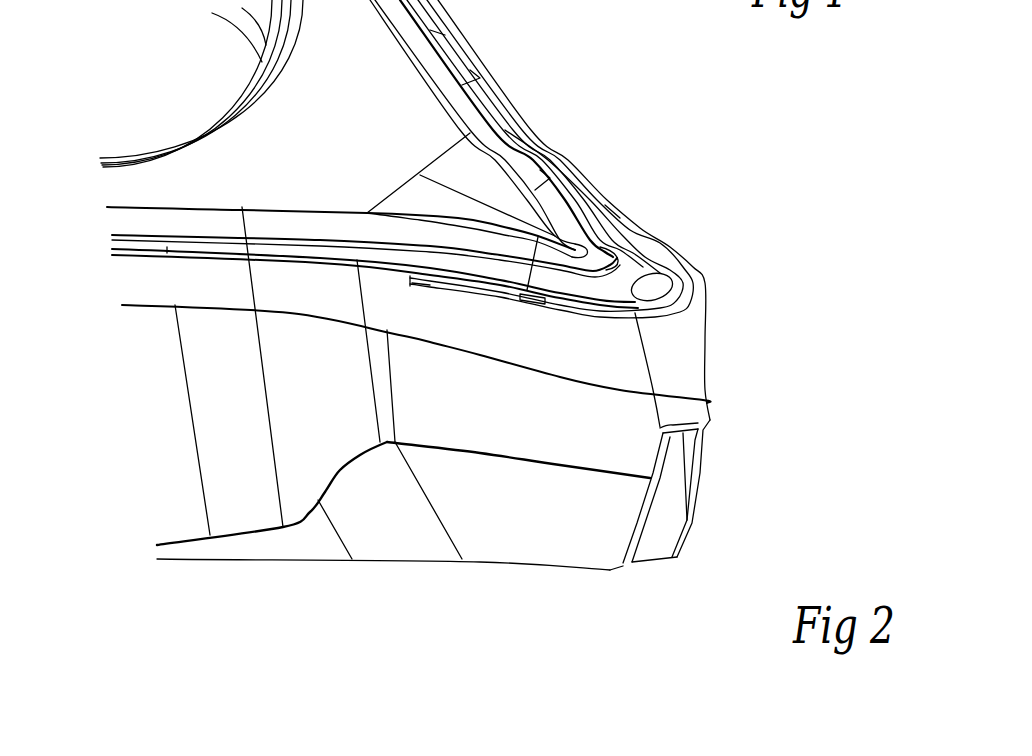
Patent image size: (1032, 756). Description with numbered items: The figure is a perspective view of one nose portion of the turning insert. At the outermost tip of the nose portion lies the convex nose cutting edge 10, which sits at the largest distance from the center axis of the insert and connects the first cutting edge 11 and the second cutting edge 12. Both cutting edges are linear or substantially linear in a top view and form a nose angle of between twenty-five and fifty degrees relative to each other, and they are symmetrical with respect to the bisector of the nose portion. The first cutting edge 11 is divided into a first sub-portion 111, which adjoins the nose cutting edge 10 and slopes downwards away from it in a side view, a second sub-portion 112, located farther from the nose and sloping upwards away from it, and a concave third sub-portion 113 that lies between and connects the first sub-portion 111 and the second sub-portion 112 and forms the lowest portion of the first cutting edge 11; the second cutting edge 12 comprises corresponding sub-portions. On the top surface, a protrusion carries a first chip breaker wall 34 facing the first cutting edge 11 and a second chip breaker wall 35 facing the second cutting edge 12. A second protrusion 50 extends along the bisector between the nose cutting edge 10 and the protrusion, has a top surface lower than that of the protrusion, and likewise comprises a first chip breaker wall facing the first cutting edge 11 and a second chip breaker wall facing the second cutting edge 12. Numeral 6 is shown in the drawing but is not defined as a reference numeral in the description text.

The wheel arch 6 is at (201, 83).
The first chip breaker wall 34 is at (500, 153).
The second chip breaker wall 35 is at (372, 257).
The second sub-portion 112 is at (572, 163).
The third sub-portion 113 is at (625, 213).
The first sub-portion 111 is at (665, 242).
The first cutting edge 11 is at (773, 140).
The second protrusion 50 is at (673, 272).
The nose cutting edge 10 is at (697, 302).
The second cutting edge 12 is at (542, 310).